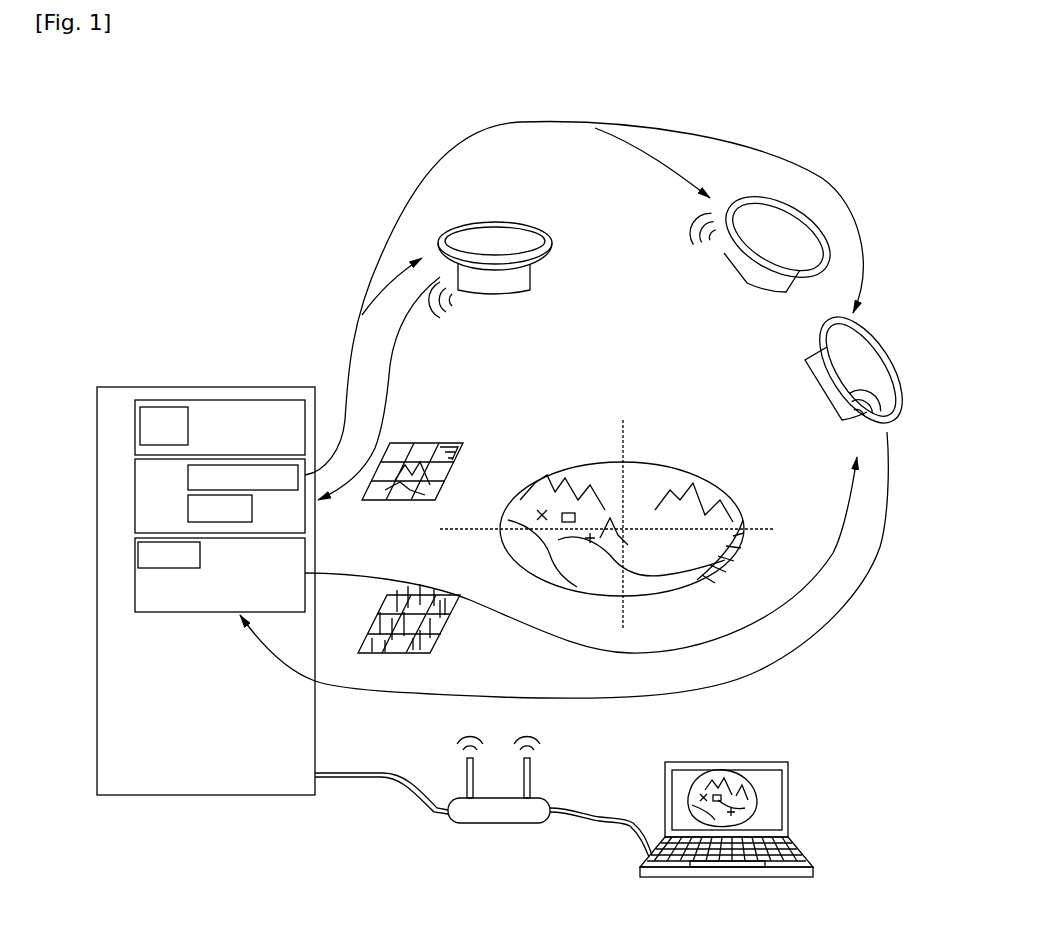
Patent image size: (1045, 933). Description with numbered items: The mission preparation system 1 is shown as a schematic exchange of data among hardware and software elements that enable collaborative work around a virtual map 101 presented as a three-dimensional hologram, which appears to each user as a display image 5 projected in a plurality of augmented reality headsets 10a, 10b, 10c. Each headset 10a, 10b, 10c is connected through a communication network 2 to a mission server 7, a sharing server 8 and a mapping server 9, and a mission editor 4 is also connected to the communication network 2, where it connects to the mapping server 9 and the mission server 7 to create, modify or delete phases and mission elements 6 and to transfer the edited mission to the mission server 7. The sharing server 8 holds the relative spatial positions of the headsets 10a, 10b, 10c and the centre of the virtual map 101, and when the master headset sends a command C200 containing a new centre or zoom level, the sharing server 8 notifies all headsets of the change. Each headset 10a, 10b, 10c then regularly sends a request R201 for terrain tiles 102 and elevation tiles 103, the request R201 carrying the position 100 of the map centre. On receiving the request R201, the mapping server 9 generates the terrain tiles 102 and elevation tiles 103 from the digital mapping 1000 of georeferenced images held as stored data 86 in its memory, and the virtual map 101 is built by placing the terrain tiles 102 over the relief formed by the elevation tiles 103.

The mission preparation system 1 is at (858, 162).
The communication network 2 is at (443, 790).
The mission editor 4 is at (798, 847).
The display image 5 is at (757, 780).
The mission elements 6 is at (527, 508).
The mission server 7 is at (235, 442).
The sharing server 8 is at (170, 495).
The mapping server 9 is at (243, 593).
The augmented reality headset 10a is at (535, 284).
The augmented reality headset 10b is at (750, 277).
The augmented reality headset 10c is at (798, 372).
The stored data 86 is at (178, 442).
The position 100 is at (630, 520).
The virtual map 101 is at (712, 498).
The terrain tiles 102 is at (440, 437).
The elevation tiles 103 is at (445, 632).
The digital mapping 1000 is at (169, 555).
The command C200 is at (392, 375).
The request R201 is at (584, 565).